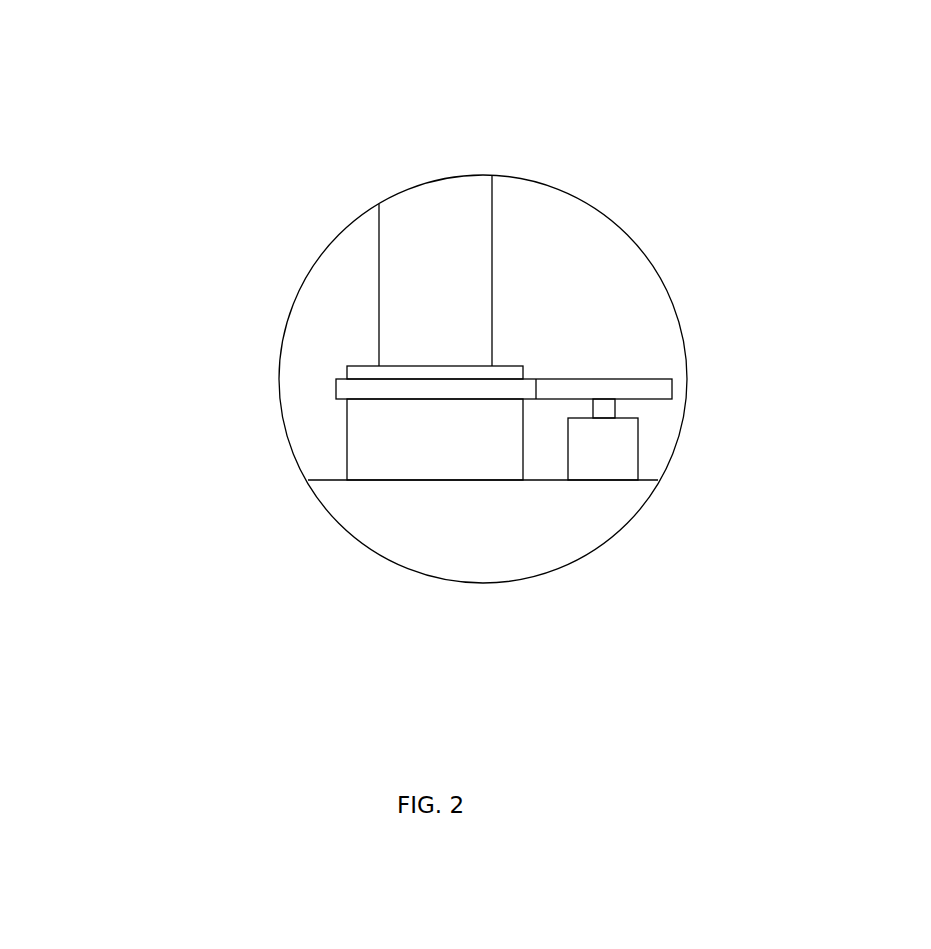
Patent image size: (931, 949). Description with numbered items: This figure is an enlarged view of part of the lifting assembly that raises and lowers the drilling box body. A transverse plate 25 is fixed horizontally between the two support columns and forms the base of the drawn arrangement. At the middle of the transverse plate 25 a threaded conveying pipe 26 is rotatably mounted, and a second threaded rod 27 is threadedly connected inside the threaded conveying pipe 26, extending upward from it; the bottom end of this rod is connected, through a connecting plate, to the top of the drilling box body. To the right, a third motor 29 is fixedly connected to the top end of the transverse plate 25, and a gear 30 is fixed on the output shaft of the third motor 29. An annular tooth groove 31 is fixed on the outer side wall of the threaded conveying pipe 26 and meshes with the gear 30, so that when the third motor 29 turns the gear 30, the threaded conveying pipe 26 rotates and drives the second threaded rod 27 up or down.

The transverse plate 25 is at (353, 586).
The threaded conveying pipe 26 is at (285, 358).
The second threaded rod 27 is at (285, 194).
The third motor 29 is at (695, 385).
The gear 30 is at (708, 296).
The annular tooth groove 31 is at (360, 264).